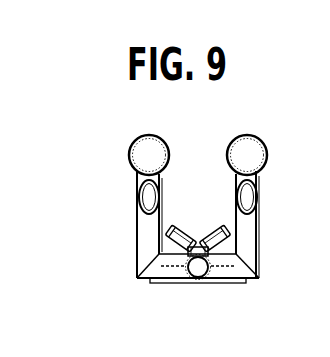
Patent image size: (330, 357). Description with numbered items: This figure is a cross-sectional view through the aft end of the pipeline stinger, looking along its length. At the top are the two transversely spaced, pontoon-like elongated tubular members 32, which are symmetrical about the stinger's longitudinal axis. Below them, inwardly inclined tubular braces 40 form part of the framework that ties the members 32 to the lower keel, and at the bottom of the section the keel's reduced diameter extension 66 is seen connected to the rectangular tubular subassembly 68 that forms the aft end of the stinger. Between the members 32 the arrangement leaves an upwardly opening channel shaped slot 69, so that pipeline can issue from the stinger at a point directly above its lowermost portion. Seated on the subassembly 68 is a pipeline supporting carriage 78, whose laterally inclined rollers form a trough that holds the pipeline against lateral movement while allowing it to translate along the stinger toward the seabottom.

The elongated tubular members 32 is at (130, 157).
The tubular braces 40 is at (137, 230).
The reduced diameter extension 66 is at (208, 263).
The tubular subassembly 68 is at (126, 269).
The channel shaped slot 69 is at (207, 157).
The pipeline supporting carriage 78 is at (215, 223).